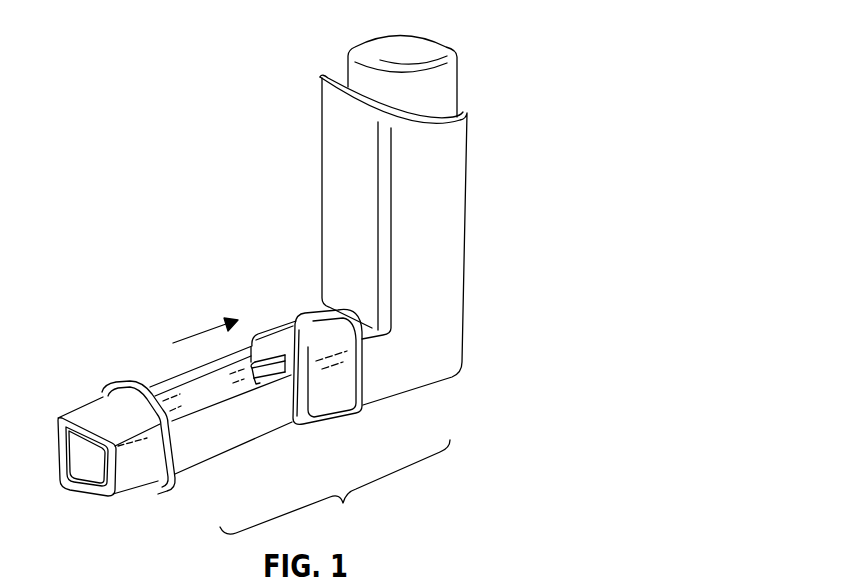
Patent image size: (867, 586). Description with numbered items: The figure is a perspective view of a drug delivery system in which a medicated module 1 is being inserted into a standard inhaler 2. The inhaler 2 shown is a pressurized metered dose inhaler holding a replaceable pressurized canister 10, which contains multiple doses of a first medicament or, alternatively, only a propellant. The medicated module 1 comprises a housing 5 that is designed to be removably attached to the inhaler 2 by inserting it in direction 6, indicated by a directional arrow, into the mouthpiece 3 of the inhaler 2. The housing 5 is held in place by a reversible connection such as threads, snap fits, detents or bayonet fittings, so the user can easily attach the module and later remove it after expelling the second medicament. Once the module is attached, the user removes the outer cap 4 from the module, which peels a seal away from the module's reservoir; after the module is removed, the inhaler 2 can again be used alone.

The medicated module 1 is at (235, 430).
The inhaler 2 is at (464, 213).
The mouthpiece 3 is at (337, 397).
The outer cap 4 is at (135, 477).
The housing 5 is at (244, 378).
The direction 6 is at (207, 327).
The pressurized canister 10 is at (410, 50).